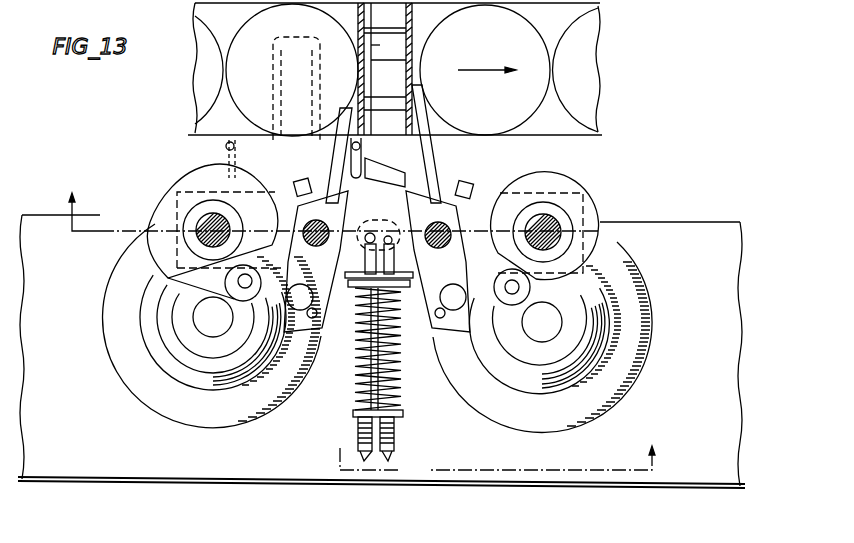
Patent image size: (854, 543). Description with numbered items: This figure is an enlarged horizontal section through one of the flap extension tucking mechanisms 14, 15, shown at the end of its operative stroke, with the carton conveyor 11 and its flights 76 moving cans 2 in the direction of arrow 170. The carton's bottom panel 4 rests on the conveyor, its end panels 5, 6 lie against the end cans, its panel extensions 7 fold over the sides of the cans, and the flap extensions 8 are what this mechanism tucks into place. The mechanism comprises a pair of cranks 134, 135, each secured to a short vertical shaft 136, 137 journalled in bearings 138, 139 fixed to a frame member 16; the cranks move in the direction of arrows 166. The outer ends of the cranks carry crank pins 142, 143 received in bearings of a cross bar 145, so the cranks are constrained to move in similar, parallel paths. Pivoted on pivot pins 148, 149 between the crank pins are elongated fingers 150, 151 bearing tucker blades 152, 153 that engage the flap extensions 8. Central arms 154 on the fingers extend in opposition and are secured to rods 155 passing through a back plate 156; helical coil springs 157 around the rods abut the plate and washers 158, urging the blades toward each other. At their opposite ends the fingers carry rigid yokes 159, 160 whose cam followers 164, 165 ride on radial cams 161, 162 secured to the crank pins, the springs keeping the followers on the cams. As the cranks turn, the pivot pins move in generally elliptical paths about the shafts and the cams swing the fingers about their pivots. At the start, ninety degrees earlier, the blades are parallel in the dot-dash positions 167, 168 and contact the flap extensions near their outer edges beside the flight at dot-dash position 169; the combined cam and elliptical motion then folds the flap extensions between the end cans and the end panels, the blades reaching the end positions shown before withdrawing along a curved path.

The cans 2 is at (266, 34).
The bottom panel 4 is at (218, 14).
The end panel 5 is at (406, 20).
The end panel 6 is at (371, 48).
The panel extensions 7 is at (200, 136).
The flap extensions 8 is at (362, 32).
The carton conveyor 11 is at (606, 35).
The flap extension tucking mechanism 14 is at (358, 322).
The flap extension tucking mechanism 15 is at (296, 484).
The frame members 16 is at (730, 383).
The flights 76 is at (378, 79).
The crank 134 is at (175, 316).
The crank 135 is at (572, 305).
The shaft 136 is at (203, 331).
The shaft 137 is at (548, 331).
The bearing 138 is at (187, 384).
The bearing 139 is at (595, 375).
The crank pin 142 is at (207, 232).
The crank pin 143 is at (562, 228).
The cross bar 145 is at (487, 198).
The pivot pin 148 is at (304, 238).
The pivot pin 149 is at (449, 243).
The finger 150 is at (344, 204).
The finger 151 is at (419, 202).
The tucker blade 152 is at (342, 158).
The tucker blade 153 is at (430, 158).
The central arms 154 is at (357, 234).
The rods 155 is at (413, 470).
The back plate 156 is at (316, 320).
The helical coil springs 157 is at (357, 380).
The washers 158 is at (353, 412).
The yoke 159 is at (226, 326).
The yoke 160 is at (490, 314).
The radial cam 161 is at (150, 225).
The radial cam 162 is at (606, 229).
The cam follower 164 is at (226, 284).
The cam follower 165 is at (528, 290).
The arrows 166 is at (176, 330).
The dot-dash line 167 is at (226, 156).
The dot-dash line 168 is at (362, 158).
The dot-dash position 169 is at (299, 46).
The arrow 170 is at (472, 73).